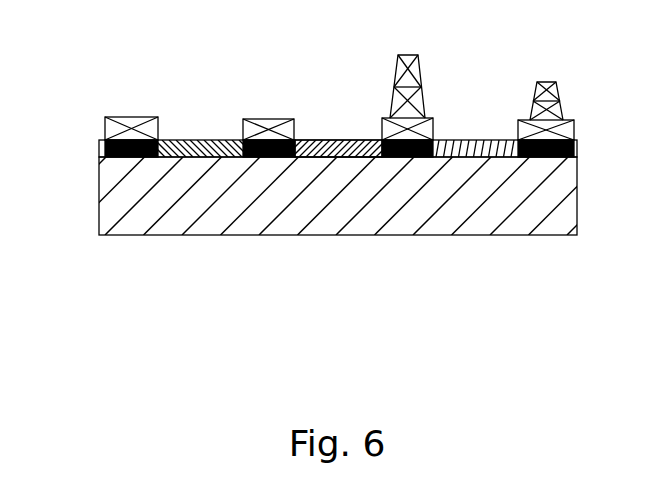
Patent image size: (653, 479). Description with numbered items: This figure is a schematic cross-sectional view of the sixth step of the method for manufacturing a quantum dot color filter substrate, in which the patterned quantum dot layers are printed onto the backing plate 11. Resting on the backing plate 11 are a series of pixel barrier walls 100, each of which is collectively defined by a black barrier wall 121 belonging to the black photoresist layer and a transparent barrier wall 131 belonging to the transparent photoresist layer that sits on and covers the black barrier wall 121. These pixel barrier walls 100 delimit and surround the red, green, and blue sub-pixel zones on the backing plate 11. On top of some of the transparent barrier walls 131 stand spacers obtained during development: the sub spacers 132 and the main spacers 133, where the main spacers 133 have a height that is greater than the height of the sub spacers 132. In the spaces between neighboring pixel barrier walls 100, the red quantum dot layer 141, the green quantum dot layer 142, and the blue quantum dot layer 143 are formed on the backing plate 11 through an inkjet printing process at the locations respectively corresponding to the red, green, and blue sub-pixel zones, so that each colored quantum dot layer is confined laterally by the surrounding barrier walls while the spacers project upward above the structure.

The backing plate 11 is at (130, 205).
The pixel barrier walls 100 is at (308, 81).
The transparent barrier walls 131 is at (265, 128).
The black barrier walls 121 is at (338, 106).
The sub spacers 132 is at (545, 105).
The main spacers 133 is at (405, 105).
The red quantum dot layer 141 is at (195, 150).
The green quantum dot layer 142 is at (327, 150).
The blue quantum dot layer 143 is at (472, 150).